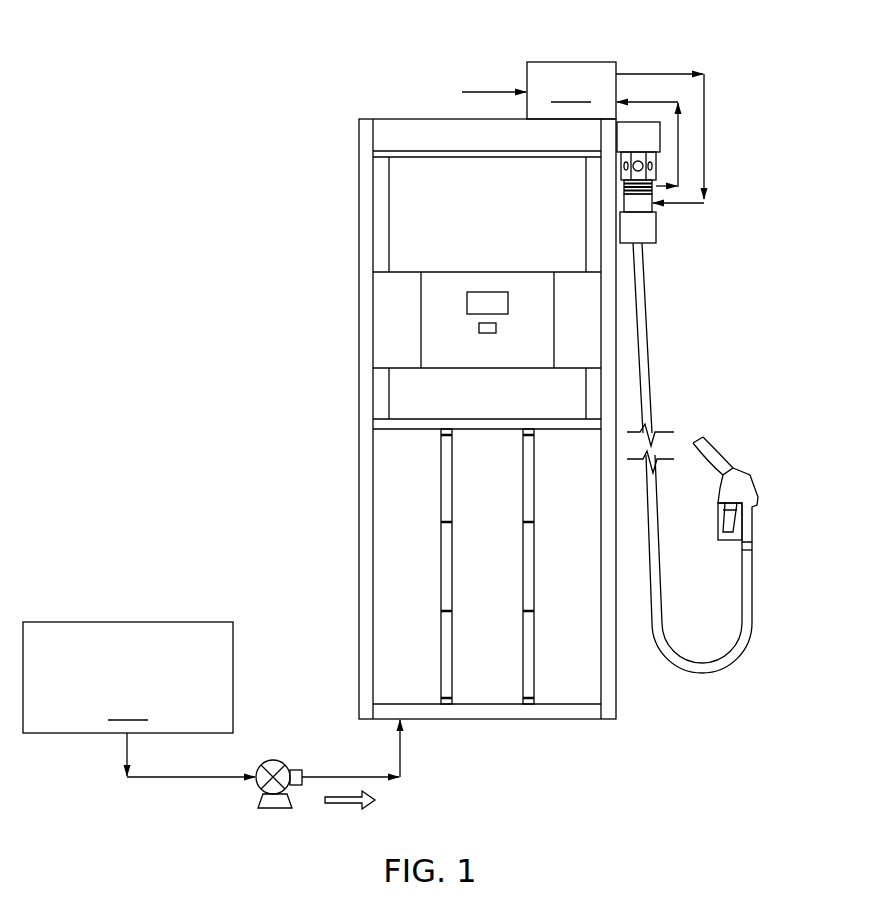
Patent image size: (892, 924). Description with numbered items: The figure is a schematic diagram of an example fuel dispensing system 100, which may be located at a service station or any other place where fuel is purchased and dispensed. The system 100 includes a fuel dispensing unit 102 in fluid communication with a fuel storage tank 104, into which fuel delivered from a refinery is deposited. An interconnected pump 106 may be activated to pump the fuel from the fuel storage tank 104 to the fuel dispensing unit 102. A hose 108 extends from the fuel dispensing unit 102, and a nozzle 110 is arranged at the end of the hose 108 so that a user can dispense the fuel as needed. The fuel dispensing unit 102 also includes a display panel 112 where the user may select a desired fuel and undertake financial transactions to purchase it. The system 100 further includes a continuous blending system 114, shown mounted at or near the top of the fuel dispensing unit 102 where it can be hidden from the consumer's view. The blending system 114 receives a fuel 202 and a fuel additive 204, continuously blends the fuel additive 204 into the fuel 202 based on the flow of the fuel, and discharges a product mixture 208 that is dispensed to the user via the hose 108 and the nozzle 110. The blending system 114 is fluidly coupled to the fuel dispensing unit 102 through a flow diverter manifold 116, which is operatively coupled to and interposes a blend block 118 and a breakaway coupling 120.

The fuel dispensing system 100 is at (122, 57).
The fuel dispensing unit 102 is at (356, 323).
The fuel storage tank 104 is at (139, 699).
The pump 106 is at (278, 760).
The hose 108 is at (651, 373).
The nozzle 110 is at (755, 490).
The display panel 112 is at (457, 325).
The continuous blending system 114 is at (571, 90).
The flow diverter manifold 116 is at (617, 189).
The blend block 118 is at (652, 132).
The breakaway coupling 120 is at (651, 228).
The fuel 202 is at (680, 151).
The fuel additive 204 is at (475, 91).
The product mixture 208 is at (705, 177).